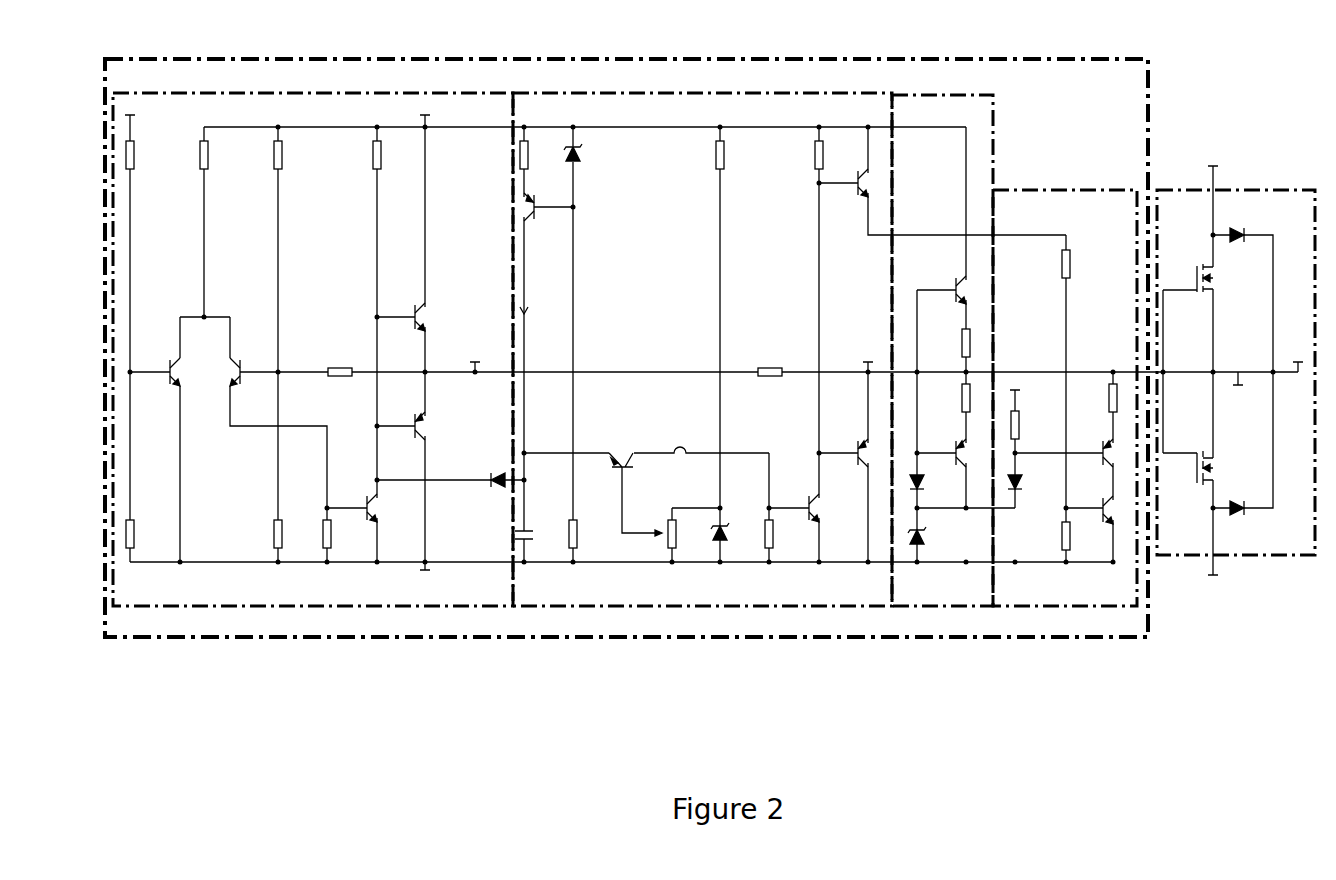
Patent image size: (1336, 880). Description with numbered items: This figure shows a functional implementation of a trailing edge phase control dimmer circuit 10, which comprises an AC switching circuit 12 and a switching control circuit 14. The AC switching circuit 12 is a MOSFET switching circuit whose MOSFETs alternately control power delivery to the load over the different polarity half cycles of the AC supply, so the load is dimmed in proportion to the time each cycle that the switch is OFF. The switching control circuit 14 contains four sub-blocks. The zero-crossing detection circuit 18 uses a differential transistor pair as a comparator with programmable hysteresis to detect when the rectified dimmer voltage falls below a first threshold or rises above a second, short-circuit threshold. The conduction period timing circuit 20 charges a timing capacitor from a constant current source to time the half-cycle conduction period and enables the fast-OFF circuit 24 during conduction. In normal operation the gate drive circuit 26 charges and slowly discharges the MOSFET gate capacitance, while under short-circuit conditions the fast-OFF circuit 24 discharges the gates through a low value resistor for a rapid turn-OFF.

The dimmer circuit 10 is at (1236, 56).
The AC switching circuit 12 is at (1279, 190).
The switching control circuit 14 is at (1043, 59).
The zero-crossing detection circuit 18 is at (403, 93).
The conduction period timing circuit 20 is at (762, 93).
The fast-OFF circuit 24 is at (1065, 190).
The gate drive circuit 26 is at (995, 95).